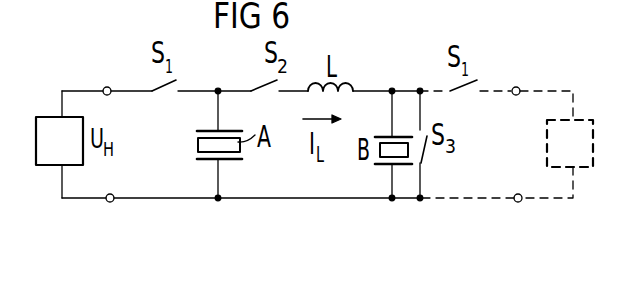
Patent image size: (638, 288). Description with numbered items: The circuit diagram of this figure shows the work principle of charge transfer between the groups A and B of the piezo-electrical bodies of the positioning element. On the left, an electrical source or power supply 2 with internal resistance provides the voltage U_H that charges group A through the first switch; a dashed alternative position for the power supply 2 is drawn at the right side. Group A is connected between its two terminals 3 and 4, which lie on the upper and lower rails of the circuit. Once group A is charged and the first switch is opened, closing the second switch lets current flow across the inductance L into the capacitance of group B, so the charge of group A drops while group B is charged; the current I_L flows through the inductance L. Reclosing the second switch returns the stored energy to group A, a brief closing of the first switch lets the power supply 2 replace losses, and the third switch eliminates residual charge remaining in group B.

The power supply 2 is at (46, 207).
The terminal 3 is at (227, 219).
The terminal 4 is at (224, 73).